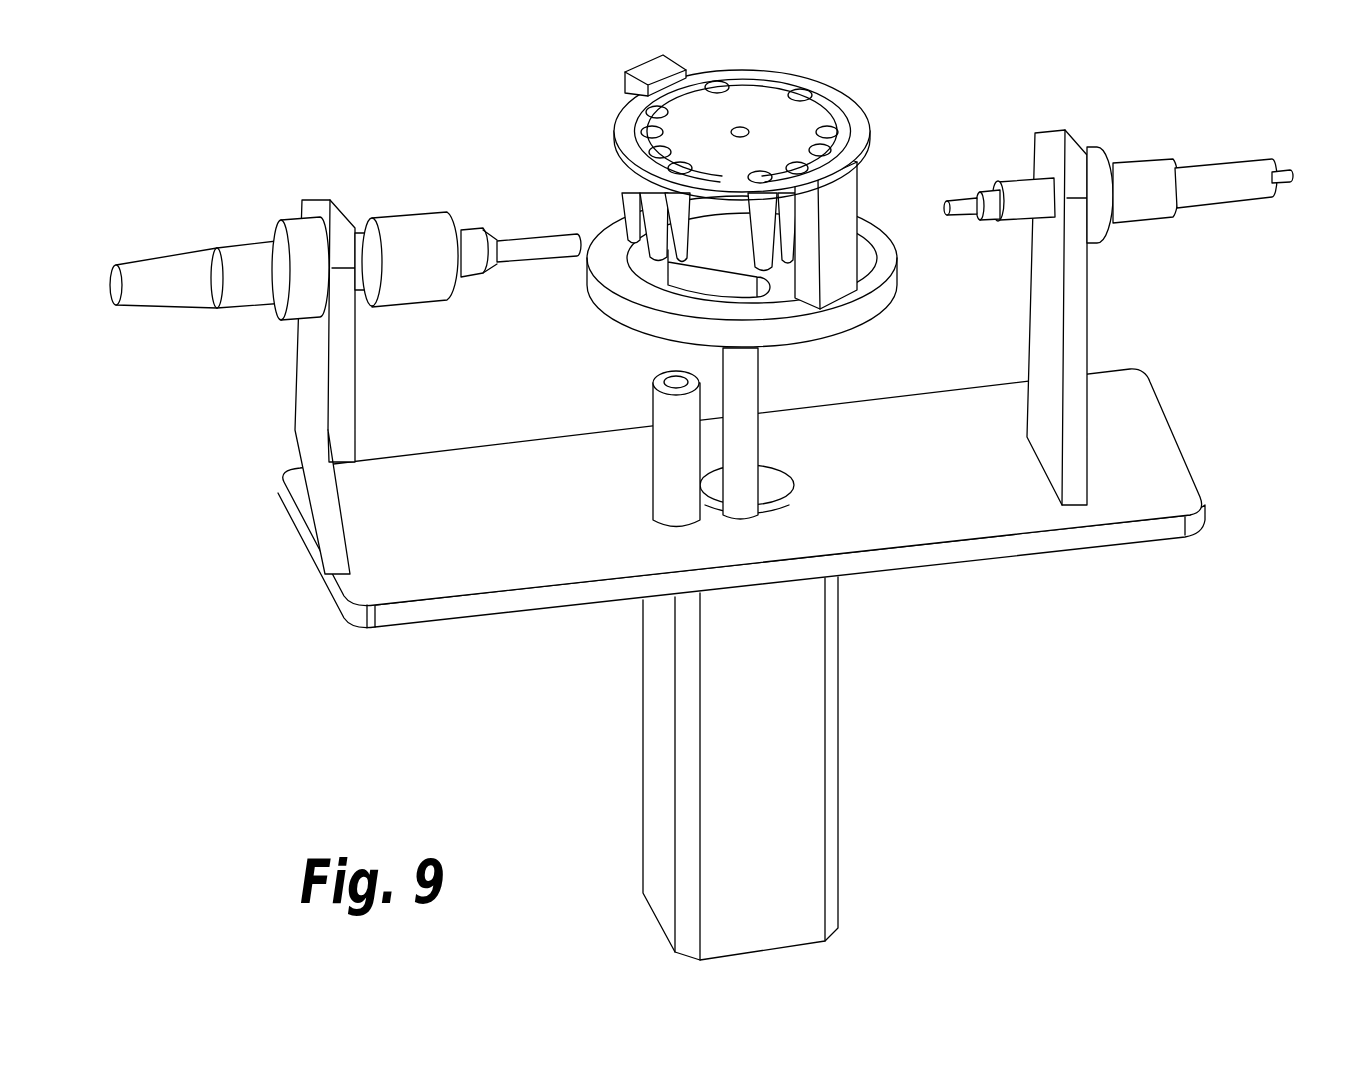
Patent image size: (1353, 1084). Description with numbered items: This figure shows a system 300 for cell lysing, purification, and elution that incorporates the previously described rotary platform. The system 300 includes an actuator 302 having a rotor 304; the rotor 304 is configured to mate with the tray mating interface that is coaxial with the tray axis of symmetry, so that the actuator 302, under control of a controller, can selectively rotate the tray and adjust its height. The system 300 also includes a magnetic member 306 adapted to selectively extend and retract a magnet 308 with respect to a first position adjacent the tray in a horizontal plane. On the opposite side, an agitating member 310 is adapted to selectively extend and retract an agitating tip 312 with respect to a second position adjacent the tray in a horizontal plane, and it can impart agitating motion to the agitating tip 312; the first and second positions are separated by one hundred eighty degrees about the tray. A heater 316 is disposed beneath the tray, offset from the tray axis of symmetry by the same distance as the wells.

The system 300 is at (1003, 765).
The actuator 302 is at (800, 703).
The rotor 304 is at (752, 445).
The magnetic member 306 is at (1087, 155).
The magnet 308 is at (952, 200).
The agitating member 310 is at (307, 236).
The agitating tip 312 is at (560, 243).
The heater 316 is at (667, 453).